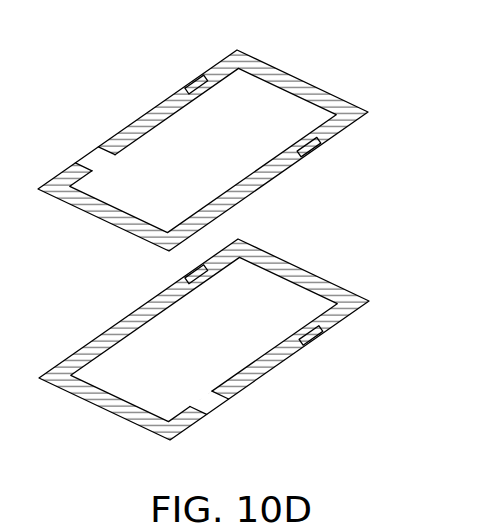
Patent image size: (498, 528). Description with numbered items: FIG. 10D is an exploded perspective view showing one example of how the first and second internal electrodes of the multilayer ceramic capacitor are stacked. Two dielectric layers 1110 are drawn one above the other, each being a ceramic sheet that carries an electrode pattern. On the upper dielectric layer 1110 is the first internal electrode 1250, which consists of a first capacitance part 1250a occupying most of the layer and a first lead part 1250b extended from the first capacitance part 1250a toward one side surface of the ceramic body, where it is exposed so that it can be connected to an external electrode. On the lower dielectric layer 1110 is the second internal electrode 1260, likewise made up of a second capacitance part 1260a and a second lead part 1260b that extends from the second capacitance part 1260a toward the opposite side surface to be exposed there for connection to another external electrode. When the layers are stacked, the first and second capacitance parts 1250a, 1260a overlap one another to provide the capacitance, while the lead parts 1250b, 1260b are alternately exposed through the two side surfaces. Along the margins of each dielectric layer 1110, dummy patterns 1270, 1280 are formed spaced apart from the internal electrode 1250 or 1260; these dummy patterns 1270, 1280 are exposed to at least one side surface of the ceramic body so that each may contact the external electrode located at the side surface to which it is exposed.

The dielectric layer 1110 is at (298, 86).
The first internal electrode 1250 is at (101, 41).
The first capacitance part 1250a is at (152, 150).
The first lead part 1250b is at (88, 156).
The second internal electrode 1260 is at (389, 413).
The second capacitance part 1260a is at (236, 350).
The second lead part 1260b is at (209, 401).
The dummy pattern 1270 is at (195, 82).
The dummy pattern 1280 is at (314, 145).